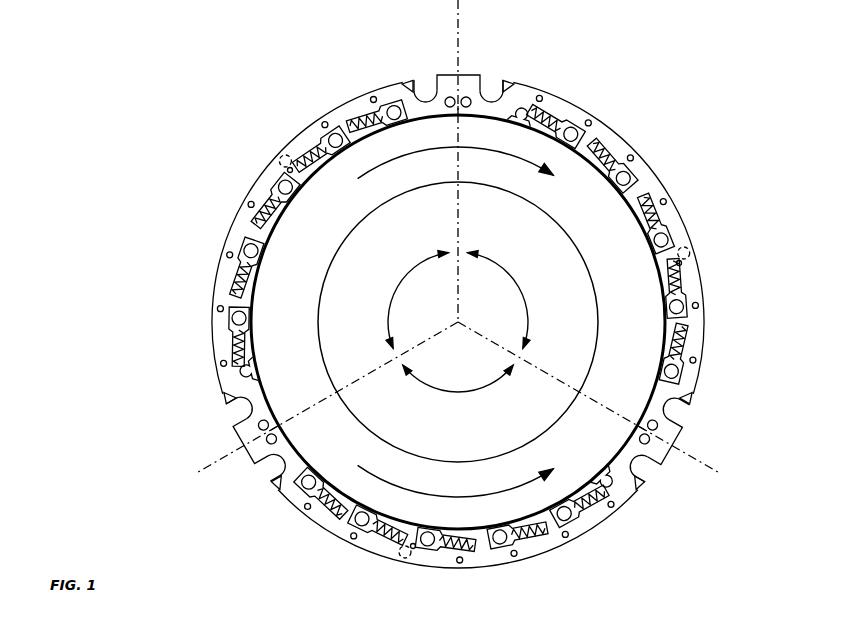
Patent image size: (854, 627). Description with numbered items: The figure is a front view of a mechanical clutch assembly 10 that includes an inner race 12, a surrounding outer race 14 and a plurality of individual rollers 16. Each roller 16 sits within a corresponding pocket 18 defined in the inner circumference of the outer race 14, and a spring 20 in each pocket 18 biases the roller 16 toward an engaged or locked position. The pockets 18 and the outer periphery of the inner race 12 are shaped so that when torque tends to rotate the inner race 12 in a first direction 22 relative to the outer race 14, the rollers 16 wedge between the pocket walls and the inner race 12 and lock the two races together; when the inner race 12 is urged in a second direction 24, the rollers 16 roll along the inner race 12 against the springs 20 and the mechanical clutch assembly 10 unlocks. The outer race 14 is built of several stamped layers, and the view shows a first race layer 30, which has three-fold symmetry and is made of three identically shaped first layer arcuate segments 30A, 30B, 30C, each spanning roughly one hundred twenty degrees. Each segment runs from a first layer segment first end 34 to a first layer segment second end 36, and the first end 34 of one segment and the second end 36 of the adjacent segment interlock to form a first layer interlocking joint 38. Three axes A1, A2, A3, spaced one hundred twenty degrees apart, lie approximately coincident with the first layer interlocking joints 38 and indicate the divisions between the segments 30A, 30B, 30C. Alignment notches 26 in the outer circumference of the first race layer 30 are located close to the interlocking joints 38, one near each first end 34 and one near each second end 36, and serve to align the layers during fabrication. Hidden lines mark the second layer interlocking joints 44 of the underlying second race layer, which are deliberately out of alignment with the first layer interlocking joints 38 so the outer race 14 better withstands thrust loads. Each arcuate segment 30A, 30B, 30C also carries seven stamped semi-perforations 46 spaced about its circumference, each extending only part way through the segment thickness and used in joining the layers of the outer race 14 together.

The mechanical clutch assembly 10 is at (232, 91).
The inner race 12 is at (295, 332).
The outer race 14 is at (346, 102).
The roller 16 is at (238, 290).
The pocket 18 is at (233, 220).
The spring 20 is at (258, 212).
The first direction 22 is at (441, 150).
The second direction 24 is at (440, 494).
The alignment notch 26 is at (404, 82).
The first race layer 30 is at (467, 338).
The first layer arcuate segment 30A is at (647, 172).
The first layer arcuate segment 30B is at (540, 560).
The first layer arcuate segment 30C is at (316, 124).
The first layer segment first end 34 is at (464, 82).
The first layer segment second end 36 is at (424, 94).
The first layer interlocking joint 38 is at (451, 99).
The second layer interlocking joint 44 is at (690, 216).
The semi-perforation 46 is at (705, 310).
The axis A1 is at (463, 18).
The axis A2 is at (722, 474).
The axis A3 is at (195, 472).